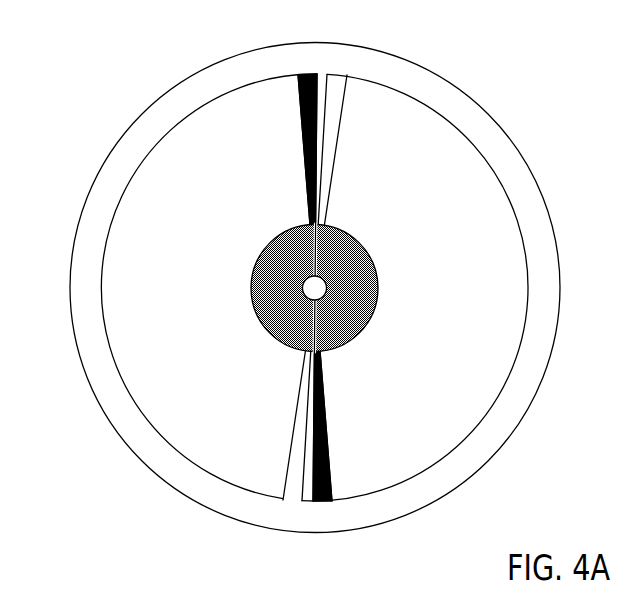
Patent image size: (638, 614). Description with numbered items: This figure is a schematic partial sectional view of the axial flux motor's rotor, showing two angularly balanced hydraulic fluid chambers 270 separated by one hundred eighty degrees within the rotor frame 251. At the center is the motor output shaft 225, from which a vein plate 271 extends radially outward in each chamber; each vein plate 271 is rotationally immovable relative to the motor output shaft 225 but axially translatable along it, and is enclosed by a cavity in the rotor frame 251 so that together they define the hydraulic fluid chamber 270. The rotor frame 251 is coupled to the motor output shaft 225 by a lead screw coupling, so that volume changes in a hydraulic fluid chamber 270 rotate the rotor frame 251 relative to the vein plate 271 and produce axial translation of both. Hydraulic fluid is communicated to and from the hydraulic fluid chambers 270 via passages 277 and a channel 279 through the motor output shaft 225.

The rotor frame 251 is at (477, 125).
The hydraulic fluid chamber 270 is at (322, 86).
The vein plate 271 is at (302, 124).
The motor output shaft 225 is at (273, 245).
The passages 277 is at (312, 327).
The channel 279 is at (313, 288).